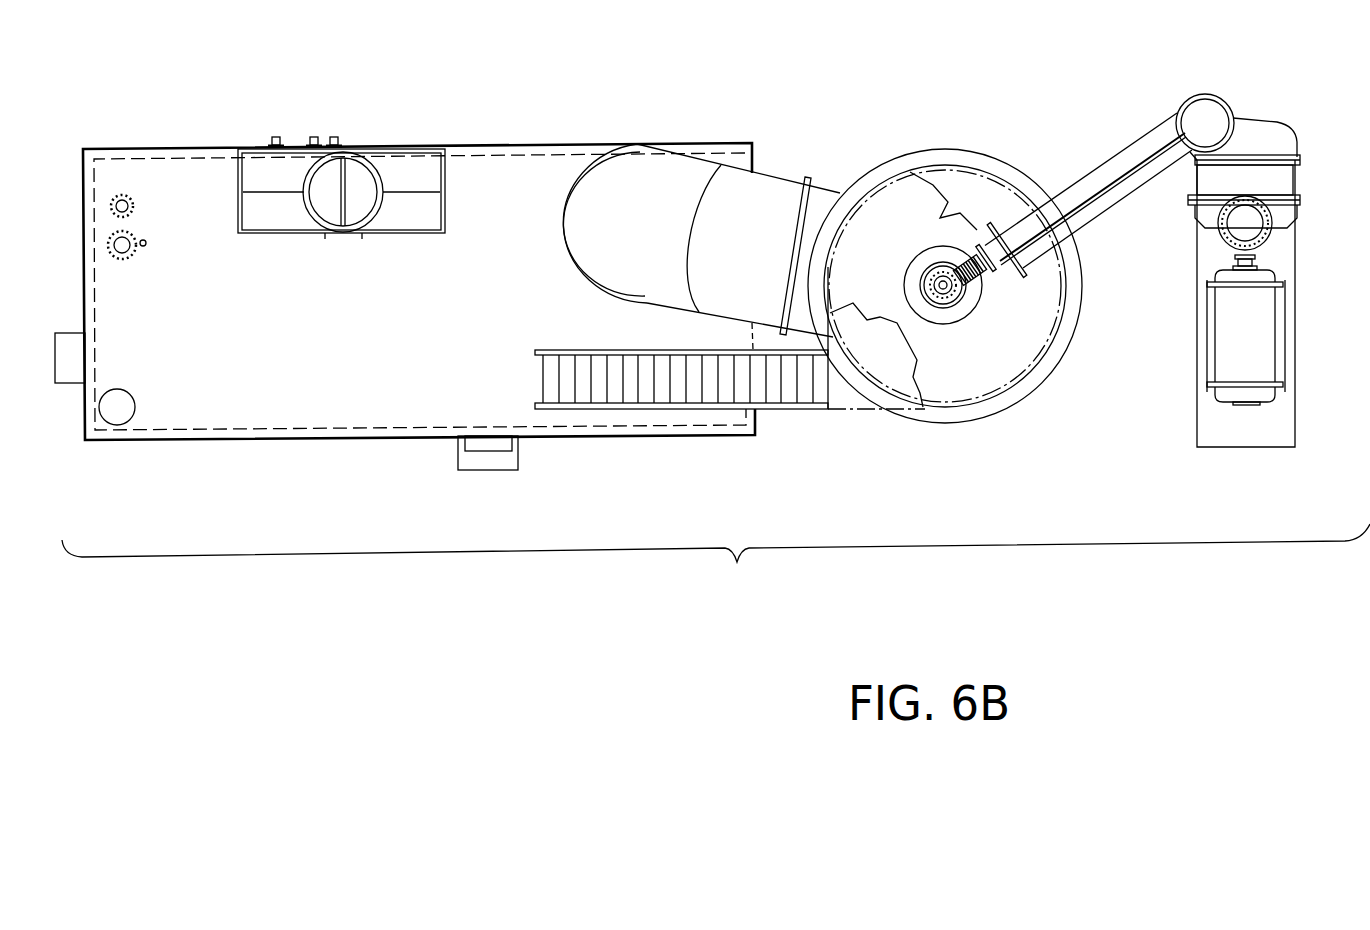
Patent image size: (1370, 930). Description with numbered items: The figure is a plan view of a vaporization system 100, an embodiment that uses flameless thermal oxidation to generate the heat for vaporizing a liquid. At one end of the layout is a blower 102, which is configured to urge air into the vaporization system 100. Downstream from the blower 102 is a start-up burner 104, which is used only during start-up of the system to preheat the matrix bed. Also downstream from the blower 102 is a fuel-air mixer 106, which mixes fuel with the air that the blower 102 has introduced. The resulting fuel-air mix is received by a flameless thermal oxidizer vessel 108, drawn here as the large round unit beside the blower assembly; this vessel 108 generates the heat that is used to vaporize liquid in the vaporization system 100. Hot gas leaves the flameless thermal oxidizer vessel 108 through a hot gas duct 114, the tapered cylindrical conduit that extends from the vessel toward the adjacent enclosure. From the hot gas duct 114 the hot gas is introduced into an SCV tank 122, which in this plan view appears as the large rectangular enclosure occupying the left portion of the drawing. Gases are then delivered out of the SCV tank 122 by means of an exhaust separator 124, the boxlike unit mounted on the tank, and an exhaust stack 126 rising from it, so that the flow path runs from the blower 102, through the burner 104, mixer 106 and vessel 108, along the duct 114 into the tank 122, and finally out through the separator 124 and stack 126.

The vaporization system 100 is at (716, 558).
The blower 102 is at (1242, 393).
The start-up burner 104 is at (945, 262).
The fuel-air mixer 106 is at (940, 322).
The flameless thermal oxidizer vessel 108 is at (947, 424).
The hot gas duct 114 is at (773, 178).
The SCV tank 122 is at (280, 443).
The exhaust separator 124 is at (412, 210).
The exhaust stack 126 is at (362, 151).